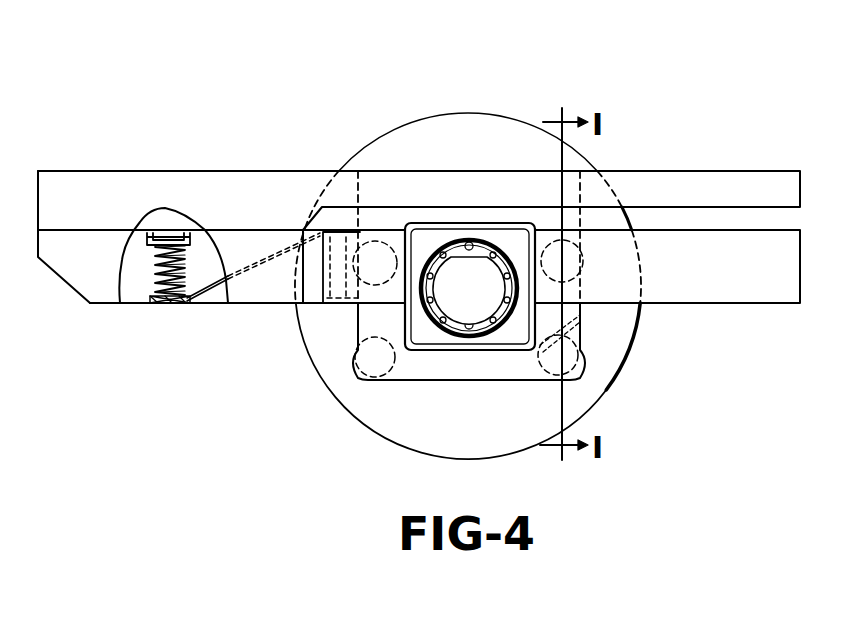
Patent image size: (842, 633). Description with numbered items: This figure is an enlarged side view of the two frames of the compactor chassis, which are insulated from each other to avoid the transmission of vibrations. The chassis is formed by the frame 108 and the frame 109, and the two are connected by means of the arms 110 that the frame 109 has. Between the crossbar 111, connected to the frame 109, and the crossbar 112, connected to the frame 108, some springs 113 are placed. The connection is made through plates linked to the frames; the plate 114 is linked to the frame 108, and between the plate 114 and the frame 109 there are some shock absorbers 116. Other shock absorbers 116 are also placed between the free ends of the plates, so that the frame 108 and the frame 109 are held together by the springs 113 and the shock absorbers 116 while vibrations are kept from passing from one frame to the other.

The frame 108 is at (707, 180).
The frame 109 is at (713, 283).
The arms 110 is at (252, 282).
The crossbar 111 is at (152, 303).
The crossbar 112 is at (178, 233).
The springs 113 is at (145, 303).
The plate 114 is at (358, 220).
The shock absorbers 116 is at (367, 280).